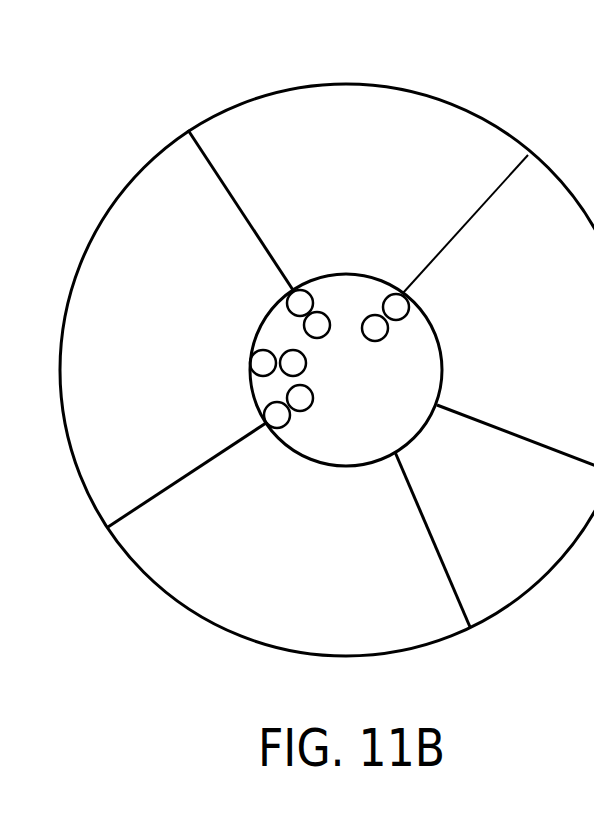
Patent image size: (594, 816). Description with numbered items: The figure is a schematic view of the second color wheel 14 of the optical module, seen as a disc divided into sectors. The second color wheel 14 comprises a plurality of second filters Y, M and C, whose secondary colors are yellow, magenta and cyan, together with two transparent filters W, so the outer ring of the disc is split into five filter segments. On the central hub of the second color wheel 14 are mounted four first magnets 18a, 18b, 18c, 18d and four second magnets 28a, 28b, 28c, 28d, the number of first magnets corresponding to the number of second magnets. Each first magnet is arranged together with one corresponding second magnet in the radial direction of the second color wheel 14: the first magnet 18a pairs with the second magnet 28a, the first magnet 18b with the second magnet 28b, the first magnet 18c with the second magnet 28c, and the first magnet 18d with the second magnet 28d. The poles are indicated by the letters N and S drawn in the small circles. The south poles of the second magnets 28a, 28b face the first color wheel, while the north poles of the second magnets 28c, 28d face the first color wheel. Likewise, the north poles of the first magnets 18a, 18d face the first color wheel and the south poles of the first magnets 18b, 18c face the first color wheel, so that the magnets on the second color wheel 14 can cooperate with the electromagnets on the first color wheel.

The second color wheel 14 is at (463, 80).
The first magnet 18a is at (257, 348).
The first magnet 18b is at (312, 292).
The first magnet 18c is at (381, 313).
The first magnet 18d is at (278, 427).
The second magnet 28a is at (291, 349).
The second magnet 28b is at (327, 316).
The second magnet 28c is at (389, 333).
The second magnet 28d is at (308, 412).